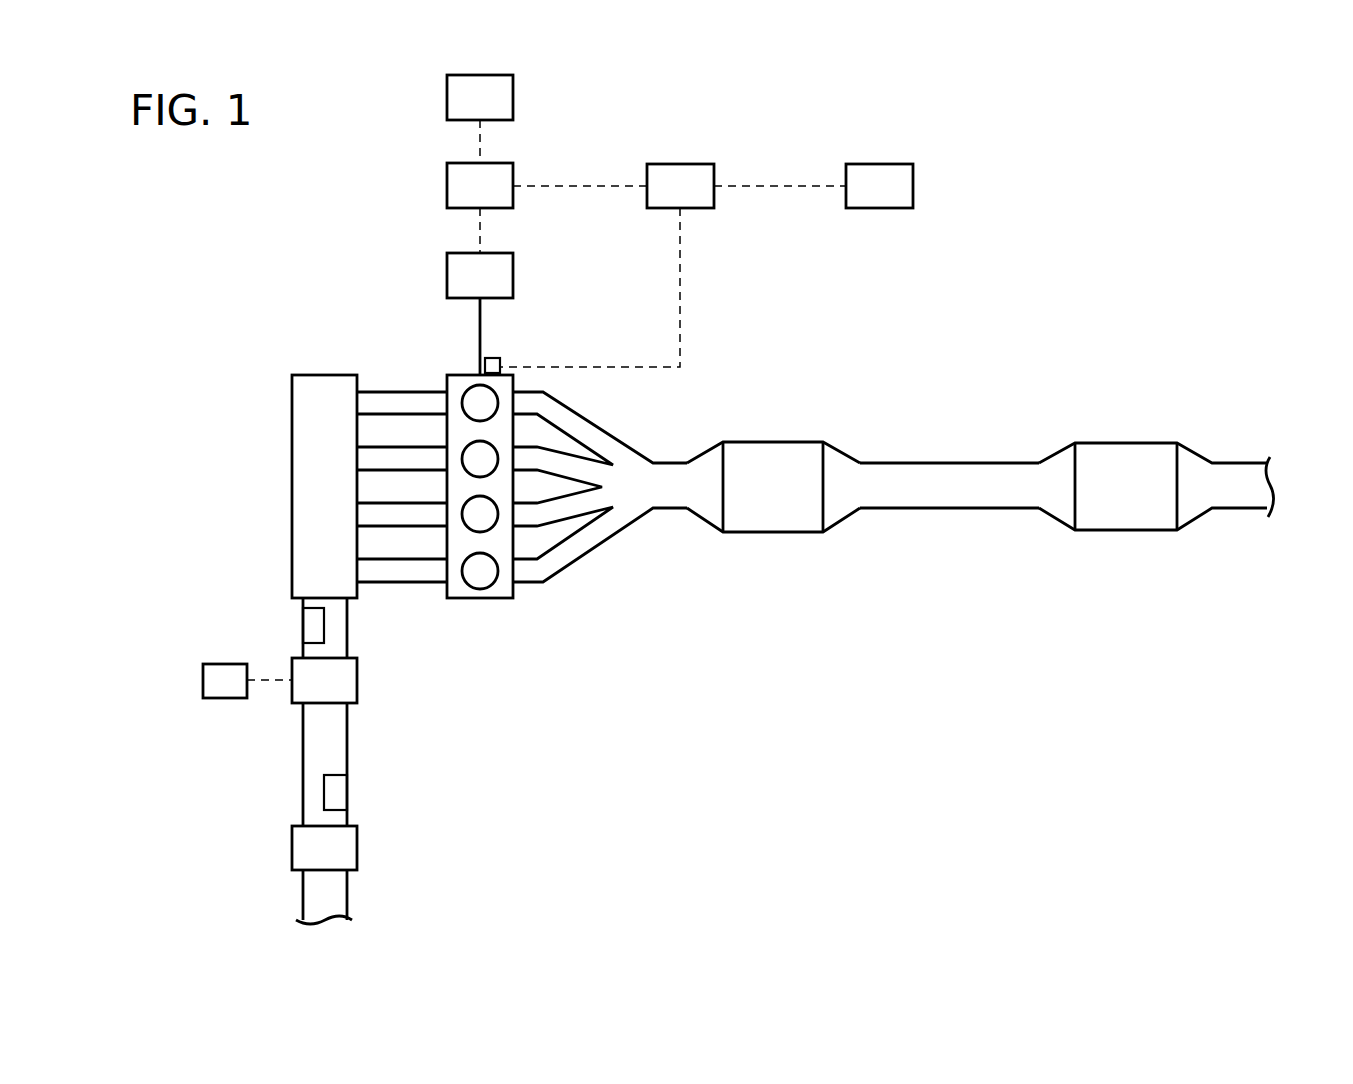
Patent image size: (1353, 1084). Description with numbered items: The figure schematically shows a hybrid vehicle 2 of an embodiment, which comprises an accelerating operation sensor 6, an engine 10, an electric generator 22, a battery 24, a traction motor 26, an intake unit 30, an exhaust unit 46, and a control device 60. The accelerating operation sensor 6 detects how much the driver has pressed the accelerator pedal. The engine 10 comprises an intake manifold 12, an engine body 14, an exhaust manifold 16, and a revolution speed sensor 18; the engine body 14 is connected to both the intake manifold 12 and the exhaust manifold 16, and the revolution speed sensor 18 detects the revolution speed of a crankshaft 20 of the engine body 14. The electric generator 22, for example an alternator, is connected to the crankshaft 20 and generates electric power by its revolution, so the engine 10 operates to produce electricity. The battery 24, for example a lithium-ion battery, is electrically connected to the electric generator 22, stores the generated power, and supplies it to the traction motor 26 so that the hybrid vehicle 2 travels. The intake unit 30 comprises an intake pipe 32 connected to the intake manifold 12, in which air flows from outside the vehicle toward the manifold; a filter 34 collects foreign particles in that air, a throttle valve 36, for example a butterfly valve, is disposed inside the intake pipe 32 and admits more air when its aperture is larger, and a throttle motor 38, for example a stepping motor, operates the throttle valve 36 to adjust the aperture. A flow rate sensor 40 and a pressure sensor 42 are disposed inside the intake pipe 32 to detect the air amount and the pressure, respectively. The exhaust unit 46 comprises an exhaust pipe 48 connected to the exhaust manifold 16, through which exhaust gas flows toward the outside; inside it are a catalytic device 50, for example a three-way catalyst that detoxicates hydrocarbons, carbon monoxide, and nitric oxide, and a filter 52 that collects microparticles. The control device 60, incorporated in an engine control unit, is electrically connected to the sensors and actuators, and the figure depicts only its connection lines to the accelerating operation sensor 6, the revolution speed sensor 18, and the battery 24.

The hybrid vehicle 2 is at (243, 246).
The accelerating operation sensor 6 is at (880, 175).
The engine 10 is at (260, 385).
The intake manifold 12 is at (325, 388).
The engine body 14 is at (503, 587).
The exhaust manifold 16 is at (592, 440).
The revolution speed sensor 18 is at (492, 357).
The crankshaft 20 is at (479, 353).
The electric generator 22 is at (457, 276).
The battery 24 is at (457, 186).
The traction motor 26 is at (457, 97).
The intake unit 30 is at (263, 867).
The intake pipe 32 is at (303, 776).
The filter 34 is at (347, 848).
The throttle valve 36 is at (347, 682).
The throttle motor 38 is at (224, 688).
The flow rate sensor 40 is at (337, 800).
The pressure sensor 42 is at (313, 625).
The exhaust unit 46 is at (1008, 388).
The exhaust pipe 48 is at (950, 475).
The catalytic device 50 is at (773, 453).
The filter 52 is at (1127, 452).
The control device 60 is at (680, 175).